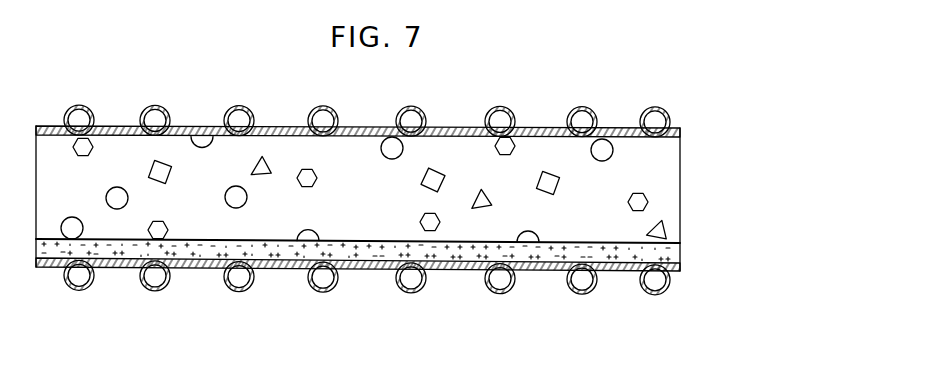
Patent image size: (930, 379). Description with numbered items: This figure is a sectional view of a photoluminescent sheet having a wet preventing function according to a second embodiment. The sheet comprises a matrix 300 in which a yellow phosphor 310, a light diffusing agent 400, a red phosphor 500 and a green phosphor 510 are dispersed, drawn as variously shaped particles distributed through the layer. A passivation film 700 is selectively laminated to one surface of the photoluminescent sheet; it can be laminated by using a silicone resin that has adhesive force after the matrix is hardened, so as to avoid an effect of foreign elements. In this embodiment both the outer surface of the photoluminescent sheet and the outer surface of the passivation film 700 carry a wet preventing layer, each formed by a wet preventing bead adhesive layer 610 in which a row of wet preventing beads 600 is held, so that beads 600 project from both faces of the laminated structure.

The matrix 300 is at (660, 188).
The yellow phosphor 310 is at (612, 154).
The light diffusing agent 400 is at (430, 232).
The red phosphor 500 is at (480, 209).
The green phosphor 510 is at (553, 192).
The wet preventing bead 600 is at (668, 112).
The wet preventing bead adhesive layer 610 is at (678, 132).
The passivation film 700 is at (678, 248).